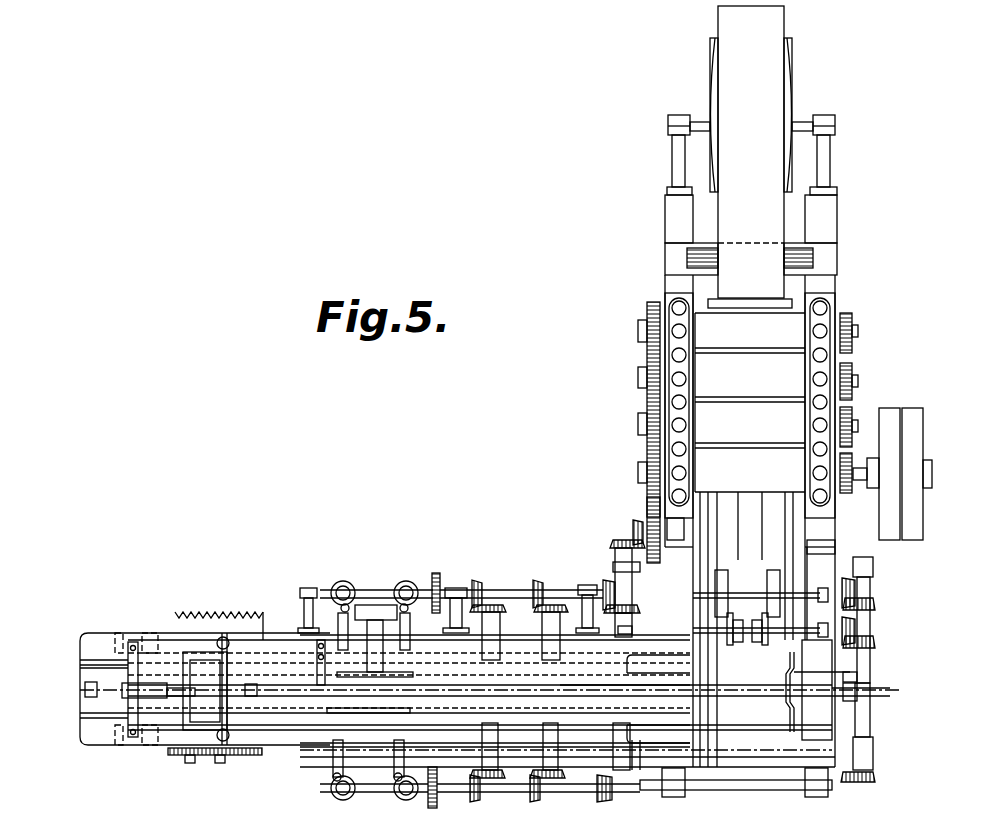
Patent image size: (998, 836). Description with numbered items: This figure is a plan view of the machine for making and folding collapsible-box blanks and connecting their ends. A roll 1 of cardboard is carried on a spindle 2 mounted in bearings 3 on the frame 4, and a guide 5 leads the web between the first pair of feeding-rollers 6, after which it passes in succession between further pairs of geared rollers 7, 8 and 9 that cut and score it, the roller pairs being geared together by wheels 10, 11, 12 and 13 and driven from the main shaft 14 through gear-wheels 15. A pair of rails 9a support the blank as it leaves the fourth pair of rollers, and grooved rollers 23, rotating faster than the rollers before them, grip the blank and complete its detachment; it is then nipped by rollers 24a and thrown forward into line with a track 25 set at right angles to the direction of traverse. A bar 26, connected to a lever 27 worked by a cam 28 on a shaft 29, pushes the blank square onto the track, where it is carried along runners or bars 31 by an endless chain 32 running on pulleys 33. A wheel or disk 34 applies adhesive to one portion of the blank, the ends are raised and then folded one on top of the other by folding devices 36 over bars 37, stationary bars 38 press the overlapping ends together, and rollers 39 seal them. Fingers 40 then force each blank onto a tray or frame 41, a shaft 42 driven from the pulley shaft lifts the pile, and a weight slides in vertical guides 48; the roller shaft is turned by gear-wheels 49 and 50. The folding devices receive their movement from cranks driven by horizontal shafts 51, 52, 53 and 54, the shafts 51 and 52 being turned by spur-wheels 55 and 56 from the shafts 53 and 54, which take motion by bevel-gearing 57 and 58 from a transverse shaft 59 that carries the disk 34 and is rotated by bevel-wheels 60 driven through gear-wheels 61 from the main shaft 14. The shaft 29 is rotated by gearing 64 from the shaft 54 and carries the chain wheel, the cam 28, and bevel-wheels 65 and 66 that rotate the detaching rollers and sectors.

The roll of cardboard 1 is at (751, 152).
The spindle 2 is at (803, 126).
The bearings 3 is at (675, 160).
The frame 4 is at (672, 221).
The guide 5 is at (750, 283).
The first pair of feeding-rollers 6 is at (750, 330).
The second pair of geared rollers 7 is at (750, 375).
The third pair of geared rollers 8 is at (750, 422).
The fourth pair of rollers 9 is at (750, 470).
The rails 9a is at (838, 545).
The gear-wheel 10 is at (650, 312).
The gear-wheel 11 is at (640, 378).
The gear-wheel 12 is at (640, 425).
The gear-wheel 13 is at (650, 497).
The main shaft 14 is at (876, 470).
The gear-wheel 15 is at (846, 500).
The rollers 23 is at (772, 598).
The rollers 24a is at (738, 644).
The track 25 is at (490, 687).
The bar 26 is at (776, 692).
The lever 27 is at (812, 671).
The cam 28 is at (880, 686).
The shaft 29 is at (868, 590).
The runners or bars 31 is at (625, 687).
The endless chain 32 is at (817, 690).
The pulleys 33 is at (858, 692).
The wheel or disk 34 is at (637, 770).
The folding devices 36 is at (380, 676).
The bars 37 is at (656, 675).
The stationary rods or bars 38 is at (279, 637).
The rollers 39 is at (200, 696).
The fingers 40 is at (195, 681).
The tray or frame 41 is at (88, 700).
The shaft 42 is at (150, 640).
The vertical guides 48 is at (95, 660).
The gear-wheel 49 is at (200, 761).
The gear-wheel 50 is at (218, 762).
The horizontal shaft 51 is at (372, 591).
The horizontal shaft 52 is at (370, 795).
The horizontal shaft 53 is at (506, 591).
The horizontal shaft 54 is at (500, 793).
The spur-wheel 55 is at (441, 585).
The spur-wheel 56 is at (438, 799).
The bevel-gearing 57 is at (610, 586).
The bevel-gearing 58 is at (603, 800).
The transverse shaft 59 is at (624, 627).
The bevel-wheels 60 is at (622, 530).
The gear-wheels 61 is at (618, 553).
The gearing 64 is at (866, 783).
The bevel-wheel 65 is at (873, 607).
The bevel-wheel 66 is at (873, 640).